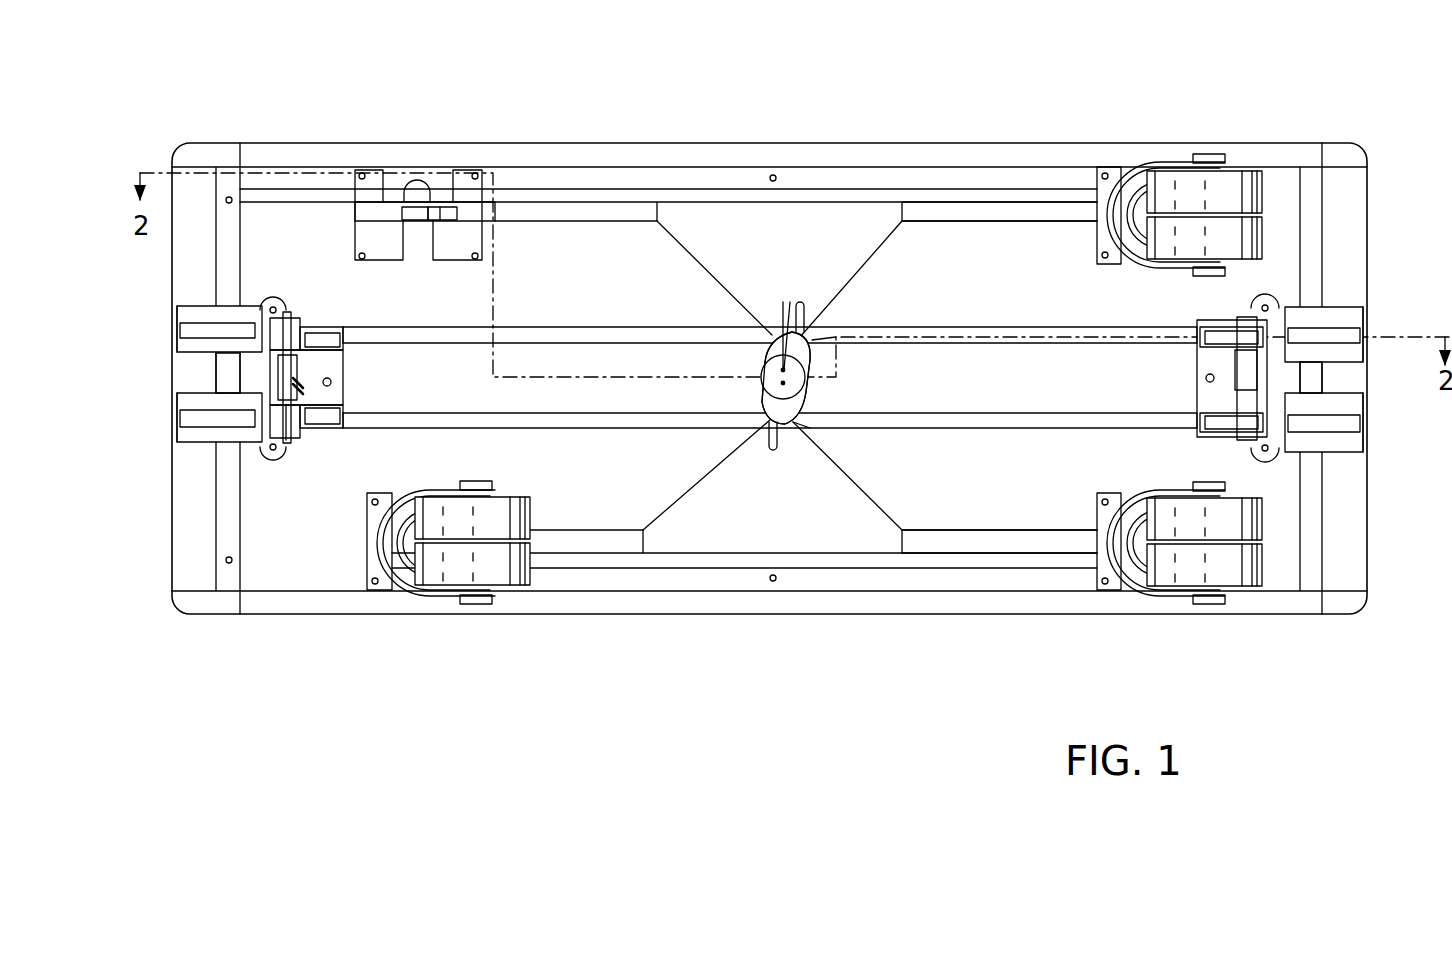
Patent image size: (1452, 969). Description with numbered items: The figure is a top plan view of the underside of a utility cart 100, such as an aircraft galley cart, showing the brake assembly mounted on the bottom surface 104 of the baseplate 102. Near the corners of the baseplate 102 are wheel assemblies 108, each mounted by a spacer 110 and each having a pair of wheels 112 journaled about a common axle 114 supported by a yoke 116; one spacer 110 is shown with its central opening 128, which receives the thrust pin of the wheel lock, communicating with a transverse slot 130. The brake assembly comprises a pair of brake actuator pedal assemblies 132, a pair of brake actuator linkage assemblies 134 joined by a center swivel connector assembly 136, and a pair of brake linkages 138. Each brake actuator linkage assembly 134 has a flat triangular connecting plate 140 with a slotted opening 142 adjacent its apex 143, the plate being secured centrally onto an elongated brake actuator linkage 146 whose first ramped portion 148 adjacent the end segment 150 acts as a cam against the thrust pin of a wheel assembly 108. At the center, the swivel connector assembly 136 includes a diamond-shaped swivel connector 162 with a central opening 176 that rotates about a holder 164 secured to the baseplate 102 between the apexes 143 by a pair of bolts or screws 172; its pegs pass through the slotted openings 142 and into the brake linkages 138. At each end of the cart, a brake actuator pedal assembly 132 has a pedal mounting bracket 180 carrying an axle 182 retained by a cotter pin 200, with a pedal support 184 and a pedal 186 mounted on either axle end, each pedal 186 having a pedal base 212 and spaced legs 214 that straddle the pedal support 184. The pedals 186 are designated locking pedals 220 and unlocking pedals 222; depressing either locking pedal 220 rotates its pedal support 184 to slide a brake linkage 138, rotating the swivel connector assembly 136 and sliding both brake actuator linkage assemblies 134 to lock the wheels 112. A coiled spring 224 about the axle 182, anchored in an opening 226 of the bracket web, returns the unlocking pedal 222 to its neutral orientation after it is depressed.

The utility cart 100 is at (415, 655).
The baseplate 102 is at (283, 622).
The bottom surface 104 is at (650, 468).
The wheel assembly 108 is at (821, 358).
The spacer 110 is at (440, 255).
The wheels 112 is at (1158, 240).
The common axle 114 is at (503, 640).
The yoke 116 is at (1113, 260).
The opening 128 is at (413, 202).
The slot 130 is at (367, 210).
The brake actuator pedal assembly 132 is at (349, 390).
The brake actuator linkage assembly 134 is at (883, 258).
The center swivel connector assembly 136 is at (770, 346).
The brake linkage 138 is at (520, 408).
The connecting plate 140 is at (687, 242).
The slotted opening 142 is at (800, 306).
The apex 143 is at (815, 332).
The brake actuator linkage 146 is at (1043, 217).
The first ramped portion 148 is at (445, 210).
The end segment 150 is at (417, 195).
The swivel connector 162 is at (783, 415).
The holder 164 is at (768, 370).
The bolts or screws 172 is at (790, 302).
The central opening 176 is at (760, 392).
The pedal mounting bracket 180 is at (342, 438).
The axle 182 is at (305, 372).
The pedal support 184 is at (340, 330).
The pedal 186 is at (176, 410).
The cotter pin 200 is at (290, 355).
The pedal base 212 is at (195, 306).
The legs 214 is at (310, 302).
The locking pedal 220 is at (227, 312).
The unlocking pedal 222 is at (218, 453).
The coiled spring 224 is at (300, 430).
The opening 226 is at (308, 387).